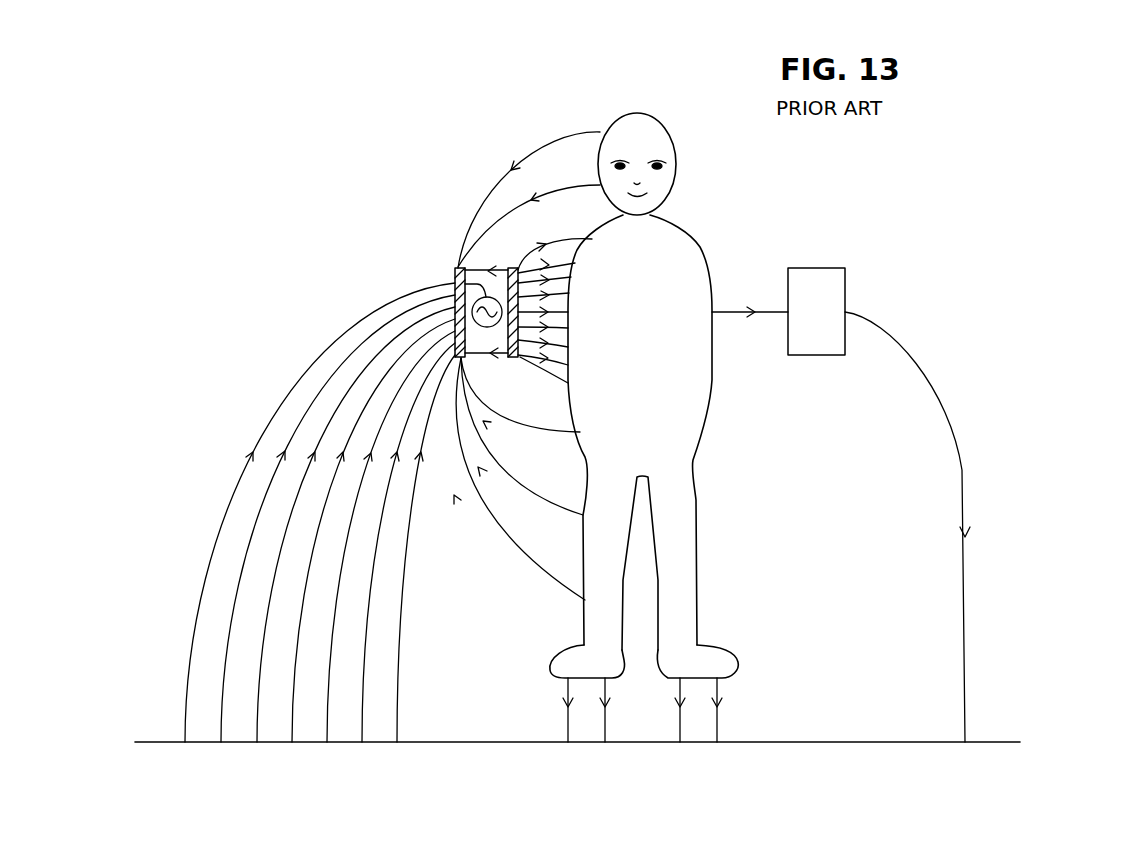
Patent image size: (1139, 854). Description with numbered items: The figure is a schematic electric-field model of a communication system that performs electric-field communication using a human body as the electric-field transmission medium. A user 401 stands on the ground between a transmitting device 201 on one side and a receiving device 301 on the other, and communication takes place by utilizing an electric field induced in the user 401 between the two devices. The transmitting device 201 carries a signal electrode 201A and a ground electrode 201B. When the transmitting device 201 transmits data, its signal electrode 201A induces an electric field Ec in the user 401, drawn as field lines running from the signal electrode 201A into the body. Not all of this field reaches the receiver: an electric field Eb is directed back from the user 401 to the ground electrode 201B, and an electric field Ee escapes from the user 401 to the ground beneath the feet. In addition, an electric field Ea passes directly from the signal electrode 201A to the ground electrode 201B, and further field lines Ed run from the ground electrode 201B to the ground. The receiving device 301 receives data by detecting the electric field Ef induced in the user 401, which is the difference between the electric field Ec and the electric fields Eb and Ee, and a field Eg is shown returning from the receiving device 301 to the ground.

The transmitting device 201 is at (439, 245).
The signal electrode 201A is at (515, 267).
The ground electrode 201B is at (458, 268).
The receiving device 301 is at (814, 268).
The user 401 is at (640, 112).
The electric field Ea is at (489, 261).
The electric field Eb is at (527, 357).
The electric field Ec is at (555, 326).
The electric field to ground Ed is at (315, 512).
The electric field Ee is at (642, 710).
The electric field Ef is at (750, 302).
The electric field from detection device to ground Eg is at (910, 527).